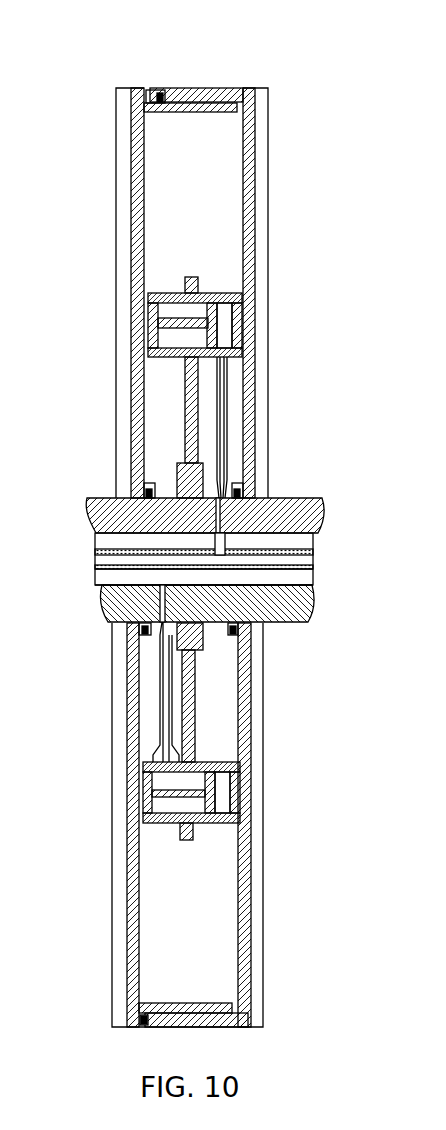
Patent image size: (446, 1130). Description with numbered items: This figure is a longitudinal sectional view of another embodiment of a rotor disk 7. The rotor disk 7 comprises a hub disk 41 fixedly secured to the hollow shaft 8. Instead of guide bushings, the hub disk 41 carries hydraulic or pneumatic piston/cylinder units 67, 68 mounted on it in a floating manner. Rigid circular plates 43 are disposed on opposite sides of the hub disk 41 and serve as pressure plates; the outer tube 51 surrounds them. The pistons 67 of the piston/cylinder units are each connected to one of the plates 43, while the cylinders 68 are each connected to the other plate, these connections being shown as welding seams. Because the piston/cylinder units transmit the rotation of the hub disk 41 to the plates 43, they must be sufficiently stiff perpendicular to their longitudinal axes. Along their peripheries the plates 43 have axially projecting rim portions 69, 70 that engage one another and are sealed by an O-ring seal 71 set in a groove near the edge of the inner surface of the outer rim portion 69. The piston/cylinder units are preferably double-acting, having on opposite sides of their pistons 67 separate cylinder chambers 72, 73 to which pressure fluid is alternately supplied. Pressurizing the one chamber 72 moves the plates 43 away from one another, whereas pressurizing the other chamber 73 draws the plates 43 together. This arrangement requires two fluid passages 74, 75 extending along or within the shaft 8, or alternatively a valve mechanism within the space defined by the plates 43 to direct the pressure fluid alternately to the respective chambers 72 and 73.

The rotor disk 7 is at (279, 137).
The hollow shaft 8 is at (290, 513).
The hub disk 41 is at (192, 418).
The circular plates 43 is at (134, 236).
The outer tube 51 is at (262, 318).
The piston 67 is at (150, 305).
The cylinder 68 is at (203, 293).
The outer rim portion 69 is at (222, 94).
The rim portion 70 is at (197, 108).
The O-ring seal 71 is at (159, 90).
The cylinder chamber 72 is at (168, 337).
The cylinder chamber 73 is at (228, 330).
The fluid passage 74 is at (302, 577).
The fluid passage 75 is at (307, 563).